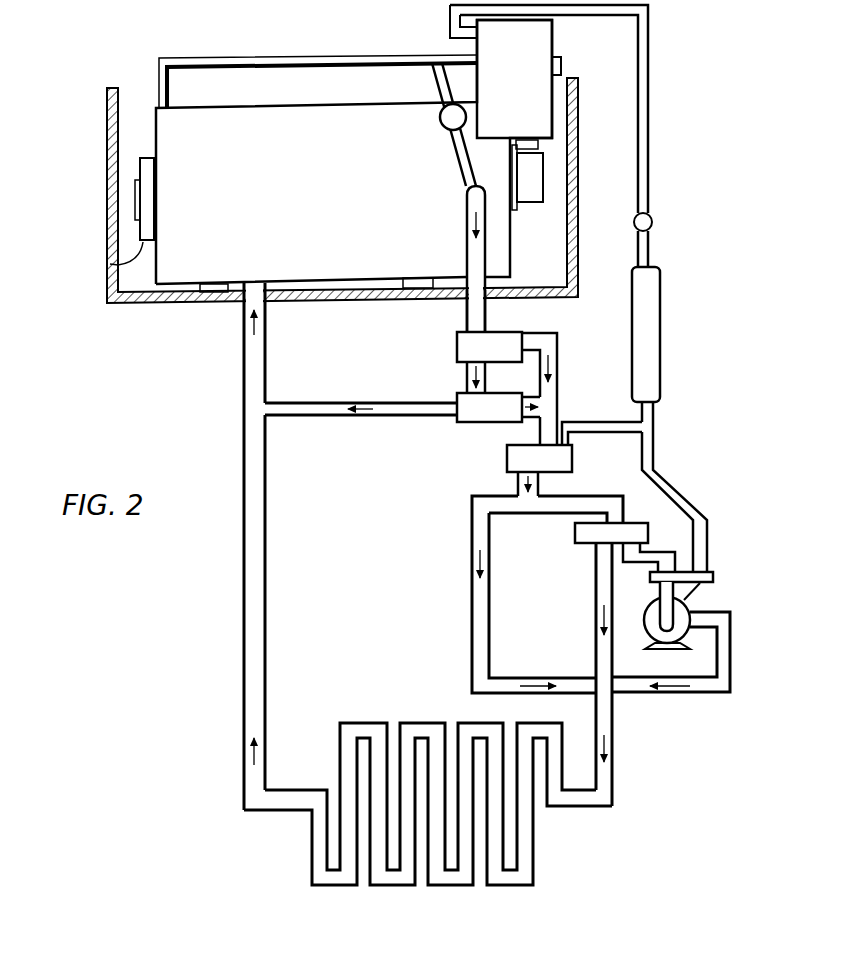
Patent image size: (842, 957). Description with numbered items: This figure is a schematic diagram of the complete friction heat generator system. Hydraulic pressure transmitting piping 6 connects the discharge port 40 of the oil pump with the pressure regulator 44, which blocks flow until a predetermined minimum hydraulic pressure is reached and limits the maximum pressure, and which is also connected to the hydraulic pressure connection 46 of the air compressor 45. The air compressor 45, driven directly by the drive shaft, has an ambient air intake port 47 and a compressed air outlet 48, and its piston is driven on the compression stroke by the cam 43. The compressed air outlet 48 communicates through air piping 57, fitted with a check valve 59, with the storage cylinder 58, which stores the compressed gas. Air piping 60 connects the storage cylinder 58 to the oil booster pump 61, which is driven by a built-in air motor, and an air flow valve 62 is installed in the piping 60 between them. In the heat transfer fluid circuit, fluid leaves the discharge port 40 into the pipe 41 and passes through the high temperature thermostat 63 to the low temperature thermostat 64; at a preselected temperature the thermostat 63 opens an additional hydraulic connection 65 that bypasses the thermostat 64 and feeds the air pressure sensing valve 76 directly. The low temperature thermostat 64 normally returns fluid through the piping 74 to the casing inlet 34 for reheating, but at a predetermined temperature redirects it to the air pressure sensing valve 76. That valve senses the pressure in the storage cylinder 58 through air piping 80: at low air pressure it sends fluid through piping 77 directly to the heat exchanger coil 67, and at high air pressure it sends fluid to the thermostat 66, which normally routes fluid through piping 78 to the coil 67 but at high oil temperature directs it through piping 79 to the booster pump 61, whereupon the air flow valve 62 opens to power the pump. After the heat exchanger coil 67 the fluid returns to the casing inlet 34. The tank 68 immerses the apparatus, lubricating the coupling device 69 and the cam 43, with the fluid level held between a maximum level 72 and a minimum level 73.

The hydraulic pressure transmitting piping 6 is at (308, 58).
The casing inlet 34 is at (266, 280).
The discharge port 40 is at (460, 192).
The pipe 41 is at (467, 307).
The cam 43 is at (545, 168).
The pressure regulator 44 is at (447, 127).
The air compressor 45 is at (553, 26).
The hydraulic pressure connection 46 is at (477, 55).
The ambient air intake port 47 is at (562, 62).
The compressed air outlet 48 is at (452, 33).
The air piping 57 is at (658, 86).
The storage cylinder 58 is at (662, 298).
The check valve 59 is at (655, 220).
The air piping 60 is at (653, 442).
The oil booster pump 61 is at (647, 622).
The air flow valve 62 is at (710, 576).
The high temperature thermostat 63 is at (457, 342).
The low temperature thermostat 64 is at (453, 424).
The hydraulic connection 65 is at (558, 347).
The thermostat 66 is at (575, 532).
The heat exchanger coil 67 is at (417, 722).
The tank 68 is at (107, 231).
The coupling device 69 is at (110, 264).
The maximum level 72 is at (137, 108).
The minimum level 73 is at (135, 160).
The piping 74 is at (328, 402).
The air pressure sensing valve 76 is at (507, 452).
The piping 77 is at (472, 590).
The piping 78 is at (595, 580).
The piping 79 is at (640, 564).
The air piping 80 is at (586, 422).